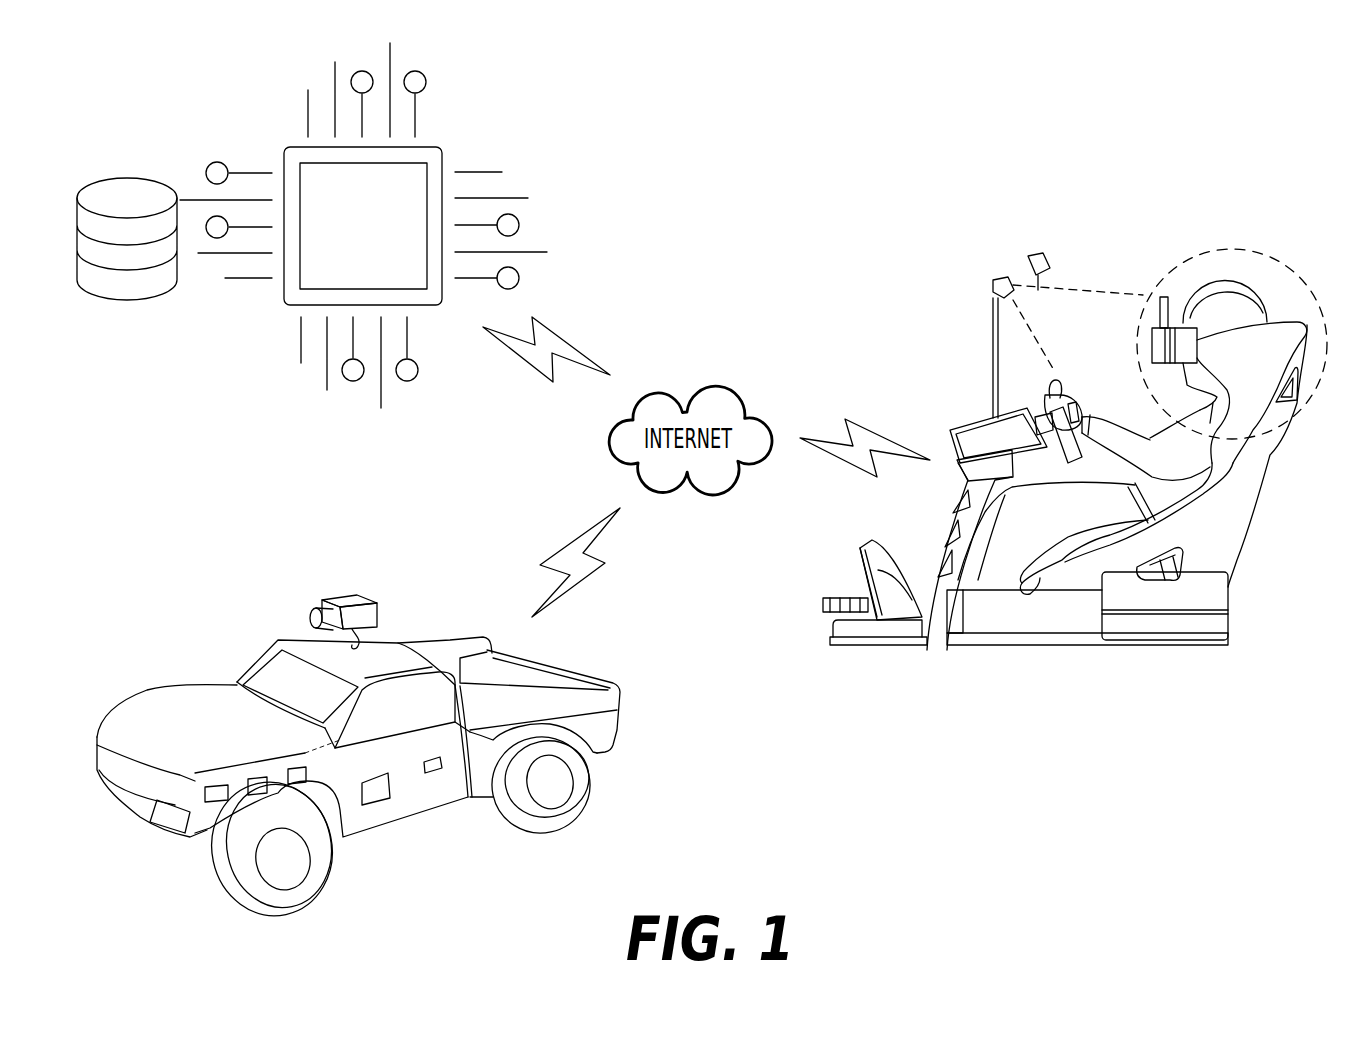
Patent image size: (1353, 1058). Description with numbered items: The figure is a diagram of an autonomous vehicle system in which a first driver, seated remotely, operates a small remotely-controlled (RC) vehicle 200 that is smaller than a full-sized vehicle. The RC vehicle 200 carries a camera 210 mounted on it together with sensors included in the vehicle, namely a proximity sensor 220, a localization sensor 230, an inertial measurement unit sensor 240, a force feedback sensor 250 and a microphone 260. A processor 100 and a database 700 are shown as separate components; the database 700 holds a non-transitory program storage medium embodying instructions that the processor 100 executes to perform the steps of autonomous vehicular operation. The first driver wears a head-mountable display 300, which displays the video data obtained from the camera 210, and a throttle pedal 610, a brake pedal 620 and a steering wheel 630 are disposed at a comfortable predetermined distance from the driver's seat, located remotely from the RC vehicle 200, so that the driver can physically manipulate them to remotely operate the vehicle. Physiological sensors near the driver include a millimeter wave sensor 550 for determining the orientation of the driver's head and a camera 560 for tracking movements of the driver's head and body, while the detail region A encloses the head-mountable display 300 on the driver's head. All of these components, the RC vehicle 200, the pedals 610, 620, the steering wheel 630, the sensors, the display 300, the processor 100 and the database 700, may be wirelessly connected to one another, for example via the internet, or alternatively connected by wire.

The processor 100 is at (442, 148).
The database 700 is at (110, 178).
The remotely-controlled (RC) vehicle 200 is at (354, 716).
The camera 210 is at (342, 596).
The proximity sensor 220 is at (215, 785).
The localization sensor 230 is at (257, 777).
The inertial measurement unit (IMU) sensor 240 is at (375, 805).
The force feedback sensor 250 is at (295, 767).
The microphone 260 is at (428, 773).
The head-mountable display 300 is at (1183, 327).
The millimeter wave (mmWave) sensor 550 is at (1000, 280).
The camera 560 is at (1033, 257).
The throttle pedal 610 is at (813, 592).
The brake pedal 620 is at (832, 573).
The steering wheel 630 is at (993, 382).
The detail region A is at (1236, 250).